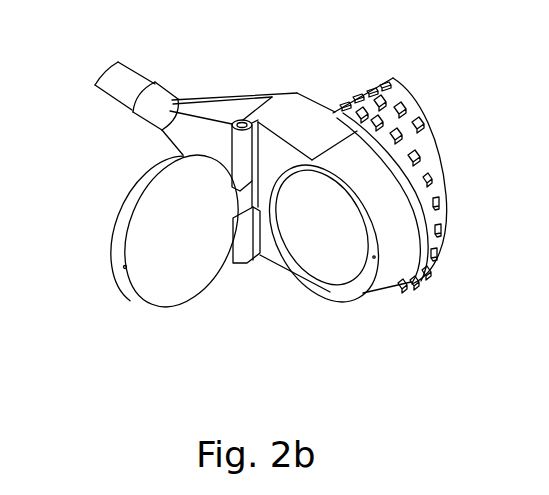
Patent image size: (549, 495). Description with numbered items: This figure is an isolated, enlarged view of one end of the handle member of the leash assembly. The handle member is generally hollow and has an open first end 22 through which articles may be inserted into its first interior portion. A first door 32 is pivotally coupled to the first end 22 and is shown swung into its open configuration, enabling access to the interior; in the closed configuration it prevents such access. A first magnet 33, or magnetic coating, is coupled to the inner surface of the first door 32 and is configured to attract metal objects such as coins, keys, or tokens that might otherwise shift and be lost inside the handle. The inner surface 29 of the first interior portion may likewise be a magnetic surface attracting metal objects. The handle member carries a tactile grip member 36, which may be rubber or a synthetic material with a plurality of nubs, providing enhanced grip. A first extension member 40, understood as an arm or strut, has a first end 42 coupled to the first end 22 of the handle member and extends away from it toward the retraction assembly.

The first extension member 40 is at (140, 59).
The first end of first extension member 42 is at (161, 96).
The tactile grip member 36 is at (366, 90).
The first door 32 is at (118, 222).
The first magnet 33 is at (167, 287).
The inner surface 29 is at (296, 238).
The first end 22 is at (328, 283).